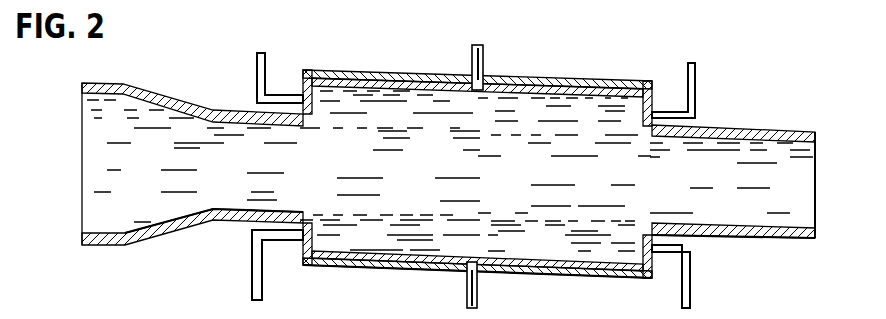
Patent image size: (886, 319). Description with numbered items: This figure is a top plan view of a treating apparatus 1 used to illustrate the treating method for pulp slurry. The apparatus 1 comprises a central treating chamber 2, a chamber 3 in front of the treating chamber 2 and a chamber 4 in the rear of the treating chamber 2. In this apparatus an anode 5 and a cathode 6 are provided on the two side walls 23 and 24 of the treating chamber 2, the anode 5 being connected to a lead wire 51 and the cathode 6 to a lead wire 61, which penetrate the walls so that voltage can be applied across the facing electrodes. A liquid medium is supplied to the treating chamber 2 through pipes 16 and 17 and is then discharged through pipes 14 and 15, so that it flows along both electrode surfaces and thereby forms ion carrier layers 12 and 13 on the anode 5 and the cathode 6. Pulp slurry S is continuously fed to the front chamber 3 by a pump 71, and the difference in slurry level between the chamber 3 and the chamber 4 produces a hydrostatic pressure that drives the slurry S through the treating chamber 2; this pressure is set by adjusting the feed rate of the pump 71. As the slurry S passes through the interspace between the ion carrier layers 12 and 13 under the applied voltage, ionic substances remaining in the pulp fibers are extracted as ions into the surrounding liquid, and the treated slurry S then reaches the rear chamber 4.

The treating apparatus 1 is at (476, 167).
The treating chamber 2 is at (578, 165).
The chamber 3 is at (170, 198).
The chamber 4 is at (730, 205).
The anode 5 is at (345, 82).
The cathode 6 is at (343, 258).
The ion carrier layer 12 is at (521, 125).
The ion carrier layer 13 is at (552, 242).
The pipe 14 is at (688, 75).
The pipe 15 is at (692, 268).
The pipe 16 is at (257, 78).
The pipe 17 is at (252, 278).
The side wall 23 is at (407, 78).
The side wall 24 is at (380, 266).
The lead wire 51 is at (473, 55).
The lead wire 61 is at (477, 274).
The pump 71 is at (18, 318).
The pulp slurry S is at (437, 168).